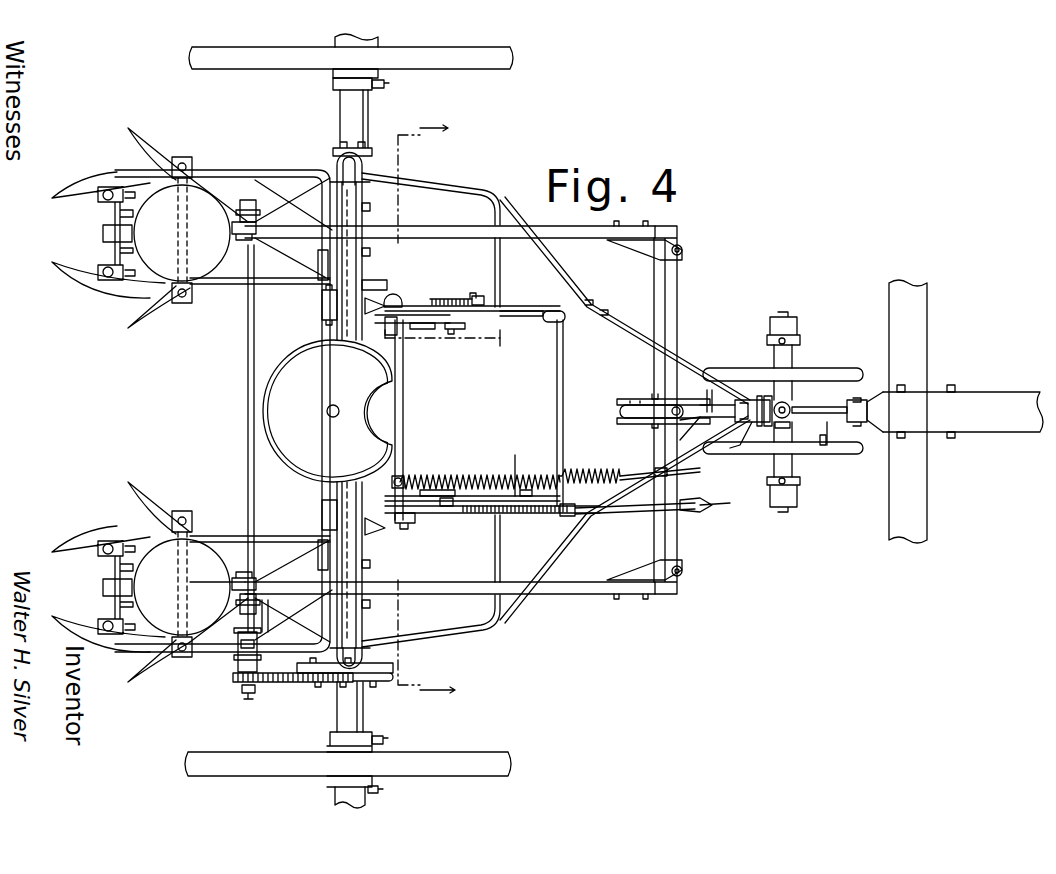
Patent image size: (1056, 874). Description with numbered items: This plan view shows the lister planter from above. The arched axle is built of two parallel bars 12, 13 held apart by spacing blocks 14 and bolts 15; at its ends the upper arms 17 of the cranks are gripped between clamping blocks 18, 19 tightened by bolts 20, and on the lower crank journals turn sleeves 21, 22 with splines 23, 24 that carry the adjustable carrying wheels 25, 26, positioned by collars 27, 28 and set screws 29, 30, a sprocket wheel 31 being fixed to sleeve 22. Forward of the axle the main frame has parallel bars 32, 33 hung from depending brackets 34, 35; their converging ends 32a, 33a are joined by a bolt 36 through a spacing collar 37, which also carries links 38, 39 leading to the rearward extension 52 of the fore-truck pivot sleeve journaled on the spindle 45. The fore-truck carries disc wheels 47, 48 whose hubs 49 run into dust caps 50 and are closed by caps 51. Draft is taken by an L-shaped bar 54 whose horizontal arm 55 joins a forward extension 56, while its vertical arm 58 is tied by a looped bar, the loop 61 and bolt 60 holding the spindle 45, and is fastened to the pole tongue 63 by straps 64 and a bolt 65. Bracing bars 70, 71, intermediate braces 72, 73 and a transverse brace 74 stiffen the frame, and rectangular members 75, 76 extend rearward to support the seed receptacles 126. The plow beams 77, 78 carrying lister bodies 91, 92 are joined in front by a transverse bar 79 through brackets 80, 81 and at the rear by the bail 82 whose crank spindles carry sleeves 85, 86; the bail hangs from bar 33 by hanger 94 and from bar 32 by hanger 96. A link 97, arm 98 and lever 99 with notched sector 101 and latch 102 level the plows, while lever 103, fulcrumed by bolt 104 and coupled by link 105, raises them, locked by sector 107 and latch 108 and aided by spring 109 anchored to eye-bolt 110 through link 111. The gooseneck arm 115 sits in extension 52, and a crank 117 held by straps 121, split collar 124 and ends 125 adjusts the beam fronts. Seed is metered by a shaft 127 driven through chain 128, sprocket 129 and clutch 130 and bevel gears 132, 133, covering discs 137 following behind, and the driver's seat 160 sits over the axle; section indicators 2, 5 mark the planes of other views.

The section line 2 is at (437, 336).
The section line 5 is at (426, 407).
The horizontally disposed parallel bar 12 is at (333, 327).
The horizontally disposed parallel bar 13 is at (380, 282).
The spacing block 14 is at (312, 495).
The bolt 15 is at (330, 520).
The upper horizontal arm of crank 17 is at (405, 652).
The clamping block 18 is at (332, 626).
The clamping block 19 is at (395, 572).
The bolt 20 is at (393, 612).
The sleeve 21 is at (360, 104).
The sleeve 22 is at (350, 698).
The rib or spline 23 is at (368, 122).
The rib or spline 24 is at (365, 720).
The carrying wheel 25 is at (440, 69).
The carrying wheel 26 is at (512, 745).
The collar 27 is at (330, 738).
The collar 28 is at (338, 796).
The set screw 29 is at (398, 739).
The set screw 30 is at (380, 793).
The sprocket wheel 31 is at (393, 670).
The forwardly extending parallel bar 32 is at (520, 302).
The converging forward end 32a is at (640, 345).
The forwardly extending parallel bar 33 is at (520, 513).
The converging forward end 33a is at (700, 440).
The bracket 34 is at (400, 294).
The bracket 35 is at (400, 530).
The bolt 36 is at (768, 396).
The spacing collar 37 is at (759, 396).
The vertically disposed link 38 is at (745, 400).
The vertically disposed link 39 is at (742, 442).
The spindle 45 is at (790, 425).
The wheel 47 is at (850, 368).
The wheel 48 is at (787, 461).
The hub 49 is at (792, 355).
The dust cap 50 is at (750, 460).
The cap 51 is at (762, 515).
The rearward extension 52 is at (705, 420).
The L-shaped bar 54 is at (860, 398).
The lower horizontal arm 55 is at (838, 434).
The forward extension 56 is at (830, 400).
The vertical arm 58 is at (915, 410).
The bolt 60 is at (825, 445).
The loop 61 is at (790, 408).
The pole tongue 63 is at (1000, 392).
The strap 64 is at (955, 460).
The bolt 65 is at (876, 398).
The bracing bar 70 is at (470, 182).
The bracing bar 71 is at (452, 640).
The intermediate brace 72 is at (493, 265).
The intermediate brace 73 is at (495, 560).
The transverse brace 74 is at (557, 397).
The rectangular frame member 75 is at (240, 178).
The rectangular frame member 76 is at (218, 536).
The plow beam 77 is at (444, 236).
The plow beam 78 is at (445, 582).
The transverse bar 79 is at (677, 296).
The bracket 80 is at (640, 252).
The bracket 81 is at (632, 560).
The bail or shaft 82 is at (403, 412).
The sleeve 85 is at (318, 268).
The sleeve 86 is at (300, 538).
The lister plow body 91 is at (240, 195).
The lister plow body 92 is at (262, 620).
The bracket or hanger 94 is at (430, 522).
The bracket or hanger 96 is at (452, 298).
The link 97 is at (397, 330).
The laterally projecting arm 98 is at (425, 329).
The lever 99 is at (460, 329).
The notched sector 101 is at (480, 296).
The latch mechanism 102 is at (540, 322).
The lever 103 is at (625, 510).
The bolt 104 is at (515, 455).
The link 105 is at (475, 475).
The notched sector 107 is at (440, 490).
The latch mechanism 108 is at (690, 512).
The spring 109 is at (595, 468).
The adjustable eye-bolt 110 is at (640, 472).
The link 111 is at (403, 476).
The downwardly and forwardly projecting arm 115 is at (707, 395).
The crank 117 is at (620, 410).
The strap 121 is at (690, 440).
The split collar 124 is at (625, 424).
The end of split collar member 125 is at (625, 438).
The seed receptacle 126 is at (150, 528).
The transverse shaft 127 is at (248, 408).
The chain 128 is at (280, 682).
The sprocket wheel 129 is at (242, 690).
The clutch mechanism 130 is at (238, 660).
The bevel gear 132 is at (240, 568).
The bevel gear 133 is at (225, 592).
The covering disc 137 is at (72, 552).
The driver's seat 160 is at (300, 362).